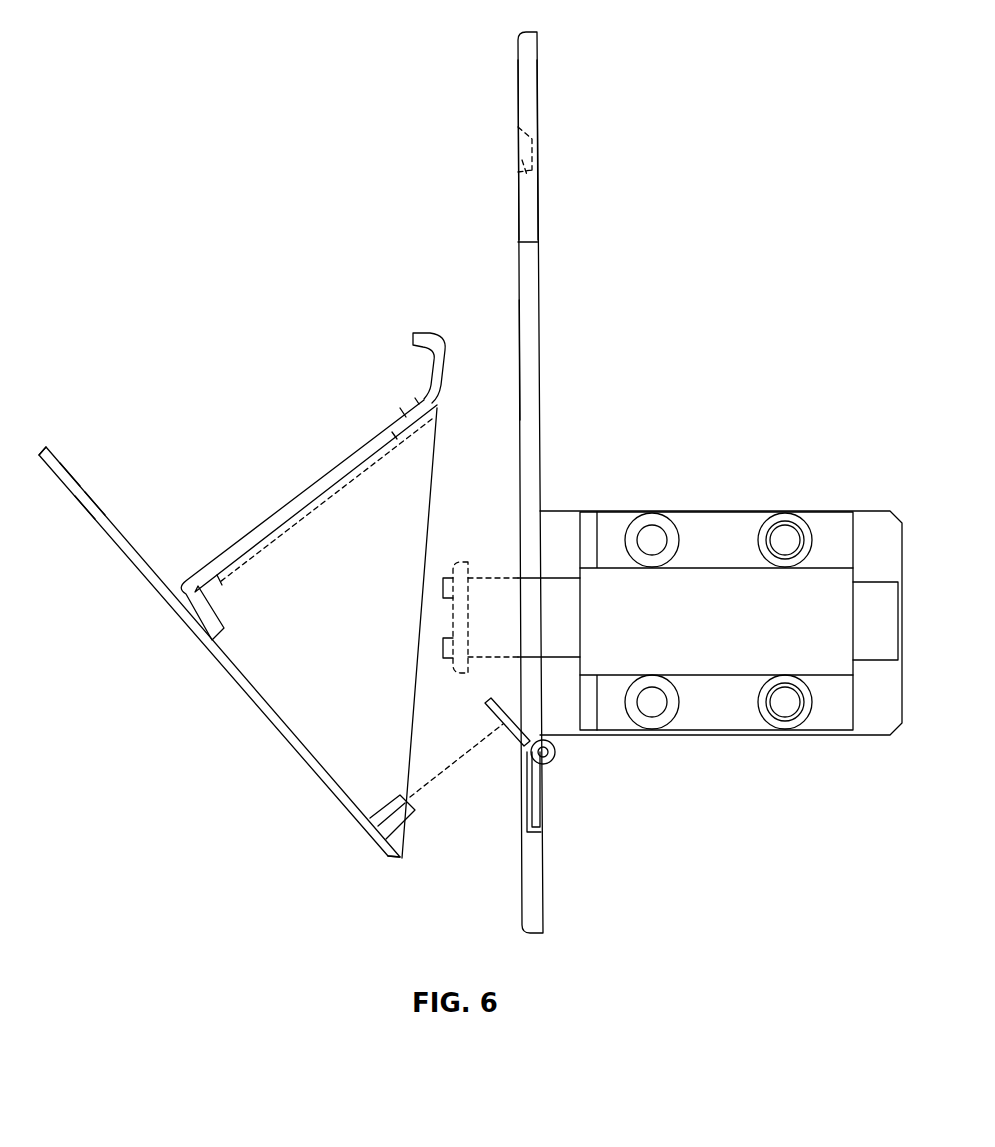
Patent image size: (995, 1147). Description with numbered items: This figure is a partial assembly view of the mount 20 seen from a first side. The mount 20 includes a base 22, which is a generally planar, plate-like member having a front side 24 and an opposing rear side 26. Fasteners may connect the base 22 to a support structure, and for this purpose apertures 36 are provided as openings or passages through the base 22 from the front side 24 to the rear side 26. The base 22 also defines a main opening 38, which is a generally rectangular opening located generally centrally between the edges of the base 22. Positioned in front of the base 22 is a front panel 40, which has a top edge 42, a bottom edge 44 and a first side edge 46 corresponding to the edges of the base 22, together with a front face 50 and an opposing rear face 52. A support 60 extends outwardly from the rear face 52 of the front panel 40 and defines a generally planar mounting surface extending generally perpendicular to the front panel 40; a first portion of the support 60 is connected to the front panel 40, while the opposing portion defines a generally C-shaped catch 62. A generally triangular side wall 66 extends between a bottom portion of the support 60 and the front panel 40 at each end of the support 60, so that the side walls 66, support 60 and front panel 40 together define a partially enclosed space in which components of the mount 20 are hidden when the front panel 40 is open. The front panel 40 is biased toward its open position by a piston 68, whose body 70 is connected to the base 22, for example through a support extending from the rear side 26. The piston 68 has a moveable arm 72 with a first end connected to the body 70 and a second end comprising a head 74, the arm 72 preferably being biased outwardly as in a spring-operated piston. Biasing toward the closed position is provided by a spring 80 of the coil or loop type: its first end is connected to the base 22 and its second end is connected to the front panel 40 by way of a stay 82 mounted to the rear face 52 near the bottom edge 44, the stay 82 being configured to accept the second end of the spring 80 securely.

The mount 20 is at (400, 146).
The base 22 is at (527, 218).
The front side 24 is at (516, 92).
The rear side 26 is at (538, 80).
The apertures 36 is at (516, 170).
The main opening 38 is at (539, 322).
The front panel 40 is at (138, 560).
The top edge 42 is at (45, 447).
The bottom edge 44 is at (398, 860).
The first side edge 46 is at (78, 475).
The front face 50 is at (92, 514).
The rear face 52 is at (97, 494).
The support 60 is at (318, 470).
The catch 62 is at (424, 333).
The side wall 66 is at (425, 468).
The piston 68 is at (708, 478).
The body 70 is at (822, 518).
The arm 72 is at (546, 578).
The head 74 is at (457, 563).
The spring 80 is at (555, 752).
The stay 82 is at (415, 815).